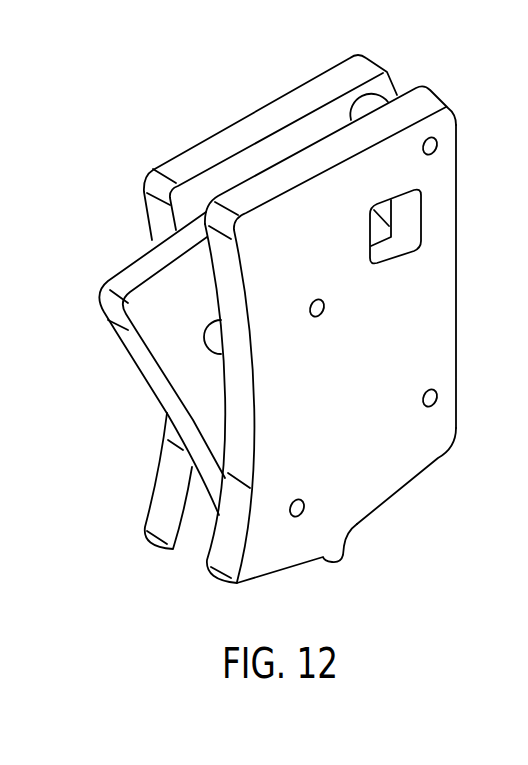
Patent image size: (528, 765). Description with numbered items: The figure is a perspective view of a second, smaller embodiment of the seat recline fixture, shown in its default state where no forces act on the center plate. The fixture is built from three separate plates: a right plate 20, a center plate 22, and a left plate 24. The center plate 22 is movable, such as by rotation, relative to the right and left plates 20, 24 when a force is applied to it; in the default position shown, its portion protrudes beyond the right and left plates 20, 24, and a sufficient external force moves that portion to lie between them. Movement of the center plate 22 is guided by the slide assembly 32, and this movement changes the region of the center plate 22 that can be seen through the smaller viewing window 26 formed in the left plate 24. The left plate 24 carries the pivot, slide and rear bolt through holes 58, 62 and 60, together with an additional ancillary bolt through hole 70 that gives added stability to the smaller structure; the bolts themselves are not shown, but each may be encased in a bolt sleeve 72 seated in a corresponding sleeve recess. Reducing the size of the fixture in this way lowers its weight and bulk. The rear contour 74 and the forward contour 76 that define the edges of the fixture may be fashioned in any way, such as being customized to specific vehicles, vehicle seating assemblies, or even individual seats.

The right plate 20 is at (281, 106).
The center plate 22 is at (172, 297).
The left plate 24 is at (434, 282).
The viewing window 26 is at (402, 222).
The slide assembly 32 is at (214, 348).
The pivot bolt through hole 58 is at (304, 504).
The rear bolt through hole 60 is at (437, 395).
The slide bolt through hole 62 is at (324, 305).
The ancillary bolt through hole 70 is at (436, 142).
The bolt sleeve 72 is at (374, 98).
The rear contour 74 is at (431, 472).
The forward contour 76 is at (310, 565).